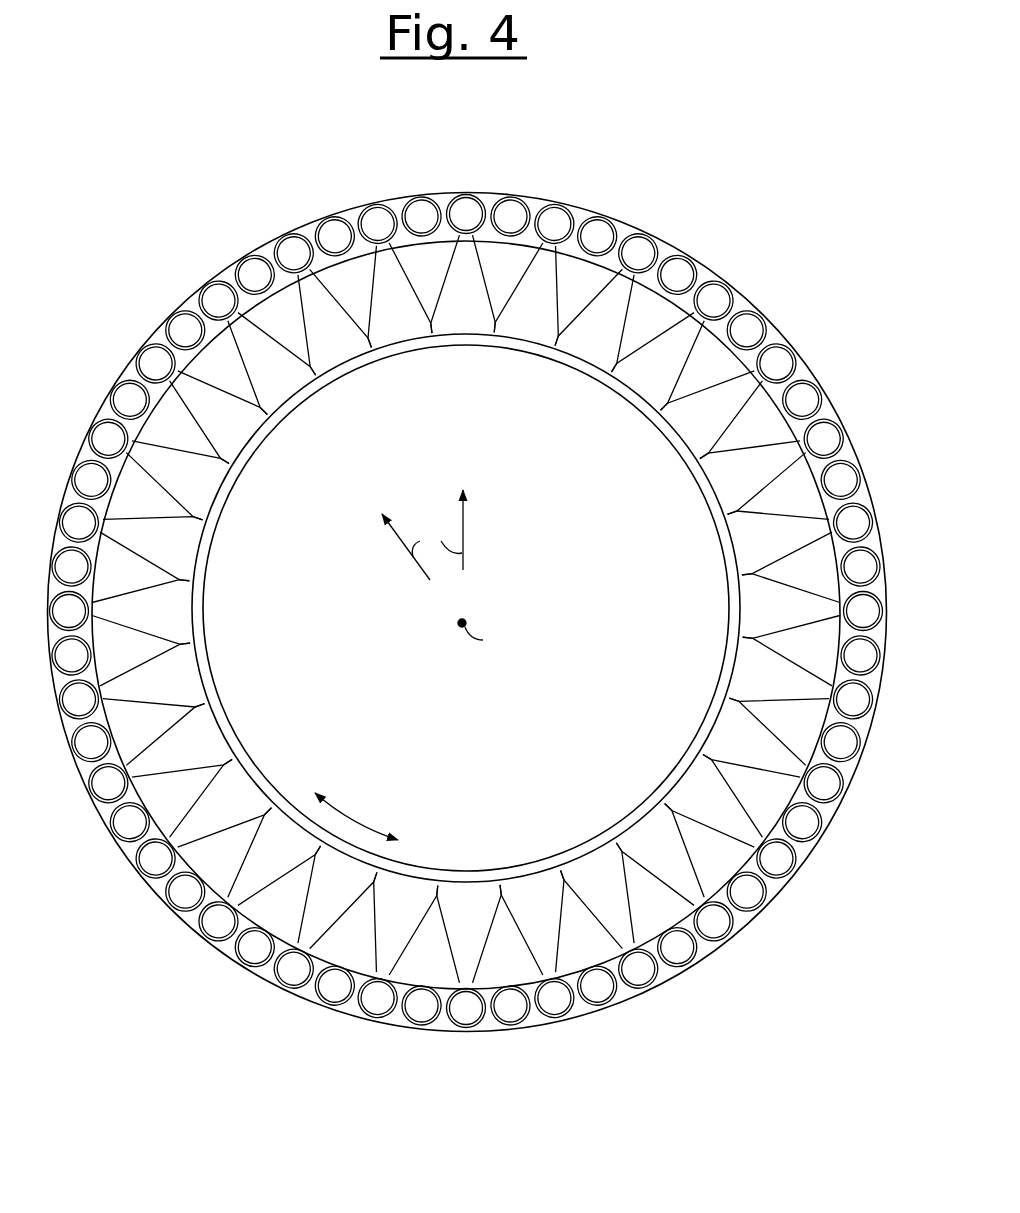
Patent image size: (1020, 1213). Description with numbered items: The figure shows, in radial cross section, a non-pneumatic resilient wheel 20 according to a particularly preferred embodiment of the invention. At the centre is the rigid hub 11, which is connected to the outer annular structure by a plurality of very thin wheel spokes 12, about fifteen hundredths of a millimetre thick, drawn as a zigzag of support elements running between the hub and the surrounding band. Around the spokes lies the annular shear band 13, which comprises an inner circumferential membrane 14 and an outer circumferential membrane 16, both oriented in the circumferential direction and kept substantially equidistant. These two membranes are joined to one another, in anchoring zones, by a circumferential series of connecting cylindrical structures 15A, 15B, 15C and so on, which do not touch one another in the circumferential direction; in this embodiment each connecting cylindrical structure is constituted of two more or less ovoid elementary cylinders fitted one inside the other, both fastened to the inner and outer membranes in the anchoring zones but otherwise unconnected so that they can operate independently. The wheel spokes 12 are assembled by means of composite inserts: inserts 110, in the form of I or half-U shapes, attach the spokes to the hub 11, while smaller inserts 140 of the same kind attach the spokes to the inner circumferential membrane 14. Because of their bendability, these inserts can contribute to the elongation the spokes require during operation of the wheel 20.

The non-pneumatic resilient wheel 20 is at (742, 253).
The shear band 13 is at (158, 345).
The outer circumferential membrane 16 is at (225, 268).
The connecting cylindrical structure 15A is at (490, 200).
The connecting cylindrical structure 15B is at (586, 213).
The connecting cylindrical structure 15C is at (624, 230).
The inner circumferential membrane 14 is at (246, 299).
The wheel spokes 12 is at (552, 297).
The inserts 140 is at (828, 528).
The inserts 110 is at (670, 420).
The hub 11 is at (192, 588).